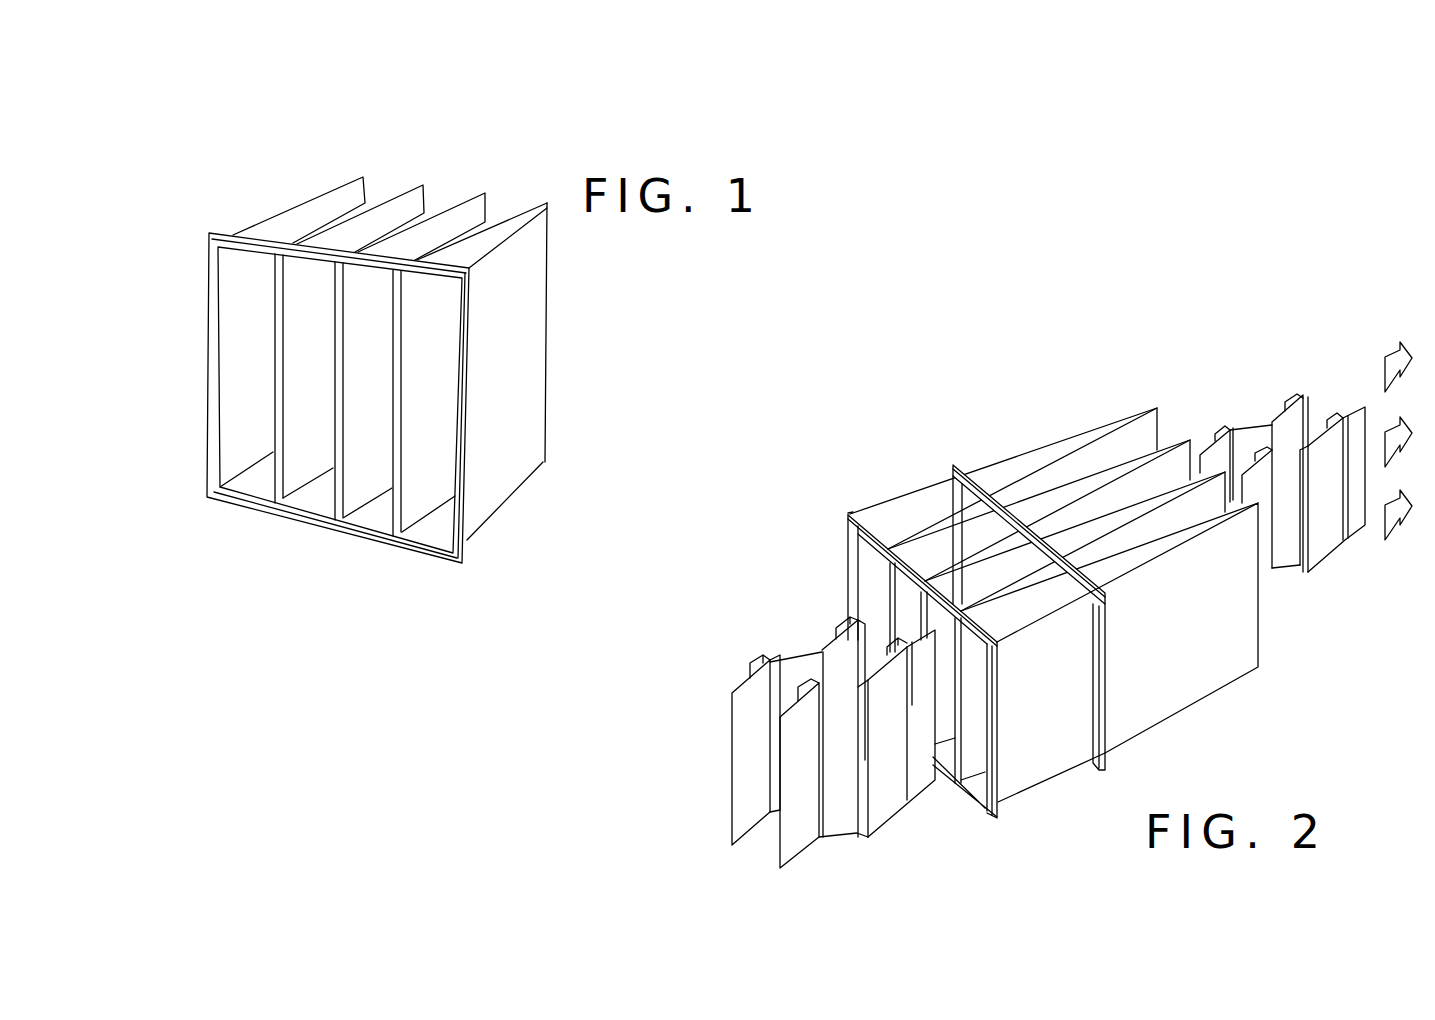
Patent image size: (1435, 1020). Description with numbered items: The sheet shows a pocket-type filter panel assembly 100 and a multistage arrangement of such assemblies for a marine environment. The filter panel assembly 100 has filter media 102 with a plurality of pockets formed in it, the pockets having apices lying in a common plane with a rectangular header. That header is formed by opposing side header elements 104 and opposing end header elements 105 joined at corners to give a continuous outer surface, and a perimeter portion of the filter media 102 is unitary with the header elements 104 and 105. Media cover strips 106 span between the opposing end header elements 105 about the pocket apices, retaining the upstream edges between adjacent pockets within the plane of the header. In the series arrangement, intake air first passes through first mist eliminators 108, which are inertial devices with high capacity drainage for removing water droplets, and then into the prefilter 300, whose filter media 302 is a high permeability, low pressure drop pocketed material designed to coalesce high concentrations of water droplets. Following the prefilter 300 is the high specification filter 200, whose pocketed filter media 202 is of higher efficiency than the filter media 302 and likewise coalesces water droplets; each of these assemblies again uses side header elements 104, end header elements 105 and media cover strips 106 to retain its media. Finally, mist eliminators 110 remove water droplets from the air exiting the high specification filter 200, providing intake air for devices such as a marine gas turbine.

In FIG. 1, the filter panel assembly 100 is at (492, 157).
In FIG. 1, the filter media 102 is at (362, 227).
In FIG. 1, the side header elements 104 is at (212, 372).
In FIG. 2, the side header elements 104 is at (984, 793).
In FIG. 1, the end header elements 105 is at (242, 508).
In FIG. 2, the end header elements 105 is at (851, 514).
In FIG. 1, the media cover strips 106 is at (338, 487).
In FIG. 2, the media cover strips 106 is at (993, 510).
In FIG. 2, the first mist eliminators 108 is at (741, 818).
In FIG. 2, the mist eliminators 110 is at (1350, 423).
In FIG. 2, the high specification filter 200 is at (1063, 408).
In FIG. 2, the filter media 202 is at (1192, 673).
In FIG. 2, the prefilter 300 is at (893, 474).
In FIG. 2, the filter media 302 is at (1030, 765).